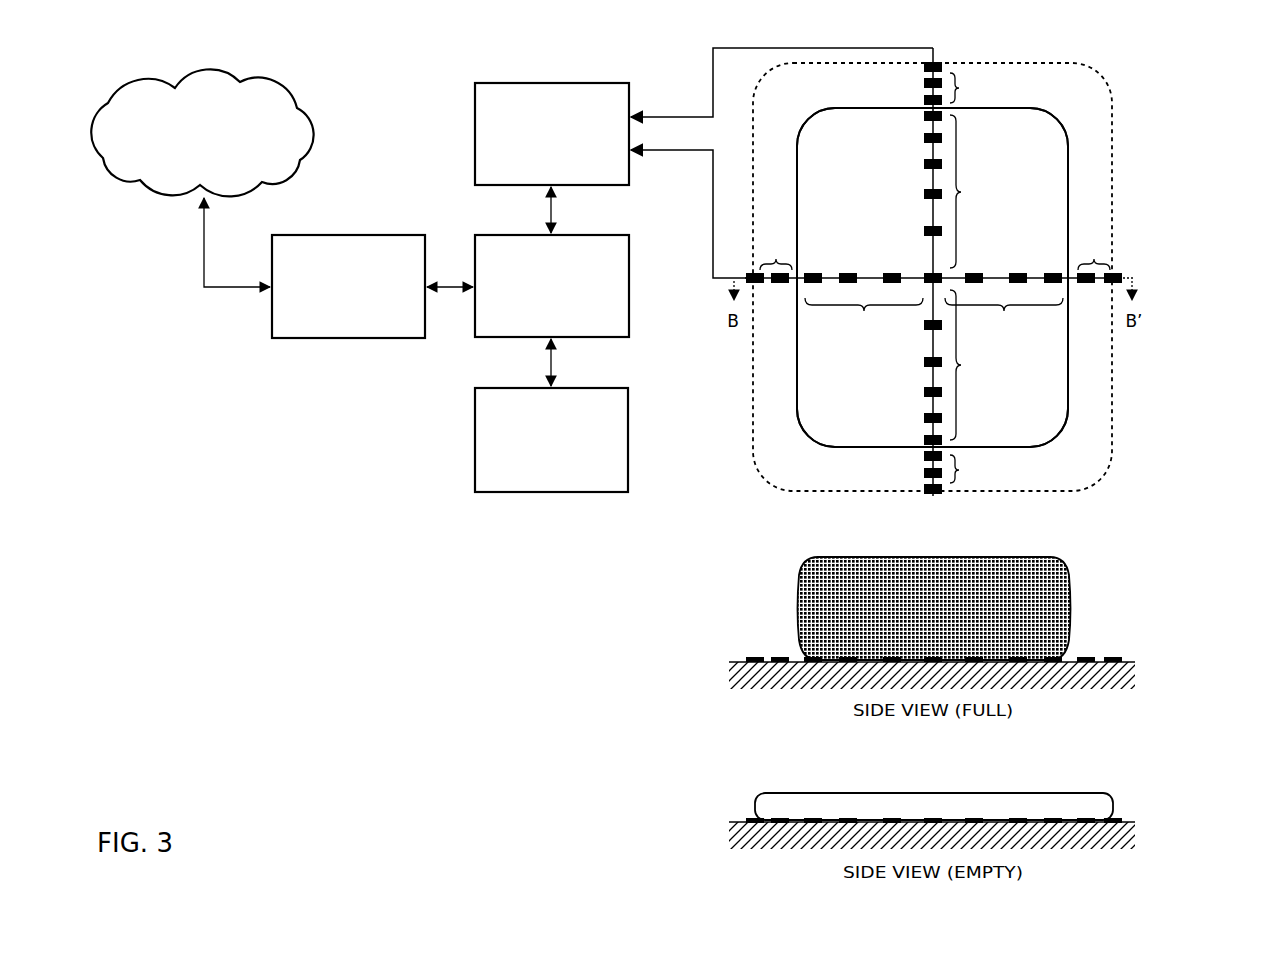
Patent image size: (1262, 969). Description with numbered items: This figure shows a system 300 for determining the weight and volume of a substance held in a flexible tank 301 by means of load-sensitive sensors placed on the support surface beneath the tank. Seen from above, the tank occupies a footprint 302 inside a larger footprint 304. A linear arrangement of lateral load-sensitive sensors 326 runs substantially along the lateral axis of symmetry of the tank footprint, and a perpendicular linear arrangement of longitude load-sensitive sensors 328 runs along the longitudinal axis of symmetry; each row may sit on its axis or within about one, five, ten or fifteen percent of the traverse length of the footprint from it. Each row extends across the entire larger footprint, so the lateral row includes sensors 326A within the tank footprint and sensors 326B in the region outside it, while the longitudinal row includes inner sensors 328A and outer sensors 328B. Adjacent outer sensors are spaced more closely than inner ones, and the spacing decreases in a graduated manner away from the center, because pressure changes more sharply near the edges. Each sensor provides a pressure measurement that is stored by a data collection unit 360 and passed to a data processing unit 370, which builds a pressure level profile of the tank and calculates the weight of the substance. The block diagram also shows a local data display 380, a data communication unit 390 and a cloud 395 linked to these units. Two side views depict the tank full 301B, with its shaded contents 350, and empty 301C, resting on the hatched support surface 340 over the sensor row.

The system 300 is at (1180, 82).
The flexible tank 301 is at (833, 152).
The full produce bag 301B is at (912, 617).
The empty produce tray 301C is at (912, 815).
The footprint 302 is at (1068, 143).
The footprint 304 is at (1112, 412).
The lateral load-sensitive sensors 326 is at (1116, 274).
The load-sensitive sensors 326A is at (934, 317).
The load-sensitive sensors 326B is at (935, 235).
The longitude load-sensitive sensors 328 is at (938, 494).
The load-sensitive sensors 328A is at (984, 277).
The load-sensitive sensors 328B is at (984, 278).
The shelf surface 340 is at (729, 673).
The produce item 350 is at (1043, 582).
The data collection unit 360 is at (595, 165).
The data processing unit 370 is at (595, 317).
The local data display 380 is at (609, 458).
The data communication unit 390 is at (391, 307).
The cloud 395 is at (187, 163).